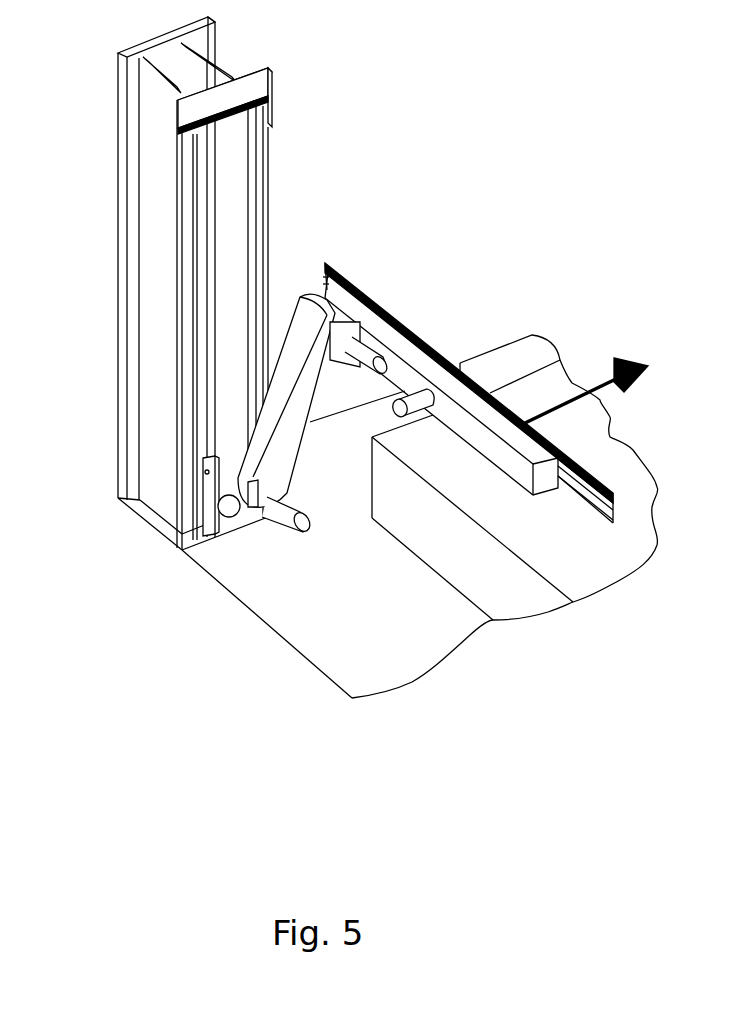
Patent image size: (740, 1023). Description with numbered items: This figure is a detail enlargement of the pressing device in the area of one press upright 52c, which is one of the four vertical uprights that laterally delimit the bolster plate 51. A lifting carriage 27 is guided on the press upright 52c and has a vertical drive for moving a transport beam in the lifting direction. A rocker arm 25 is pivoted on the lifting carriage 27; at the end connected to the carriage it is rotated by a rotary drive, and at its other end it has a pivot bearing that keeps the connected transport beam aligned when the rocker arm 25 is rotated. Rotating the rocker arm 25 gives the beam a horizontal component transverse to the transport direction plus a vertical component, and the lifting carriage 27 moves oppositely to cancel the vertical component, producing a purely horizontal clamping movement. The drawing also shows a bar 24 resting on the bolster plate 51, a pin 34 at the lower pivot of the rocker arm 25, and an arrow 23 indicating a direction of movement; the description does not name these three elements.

The press upright 52c is at (122, 70).
The rocker arm 25 is at (283, 388).
The lifting carriage 27 is at (213, 478).
The pivot pin 34 is at (250, 494).
The guide bar 24 is at (415, 320).
The direction of movement arrow 23 is at (560, 402).
The bolster plate 51 is at (593, 557).